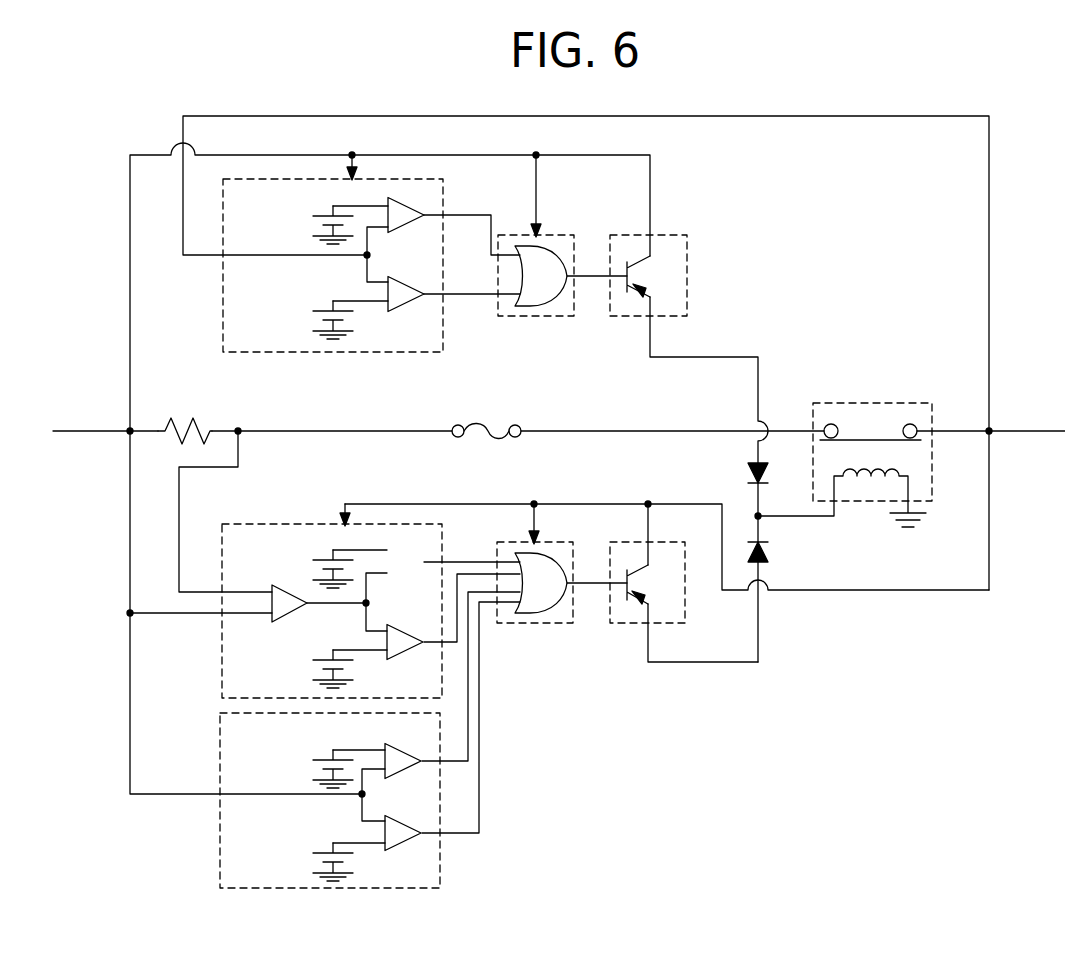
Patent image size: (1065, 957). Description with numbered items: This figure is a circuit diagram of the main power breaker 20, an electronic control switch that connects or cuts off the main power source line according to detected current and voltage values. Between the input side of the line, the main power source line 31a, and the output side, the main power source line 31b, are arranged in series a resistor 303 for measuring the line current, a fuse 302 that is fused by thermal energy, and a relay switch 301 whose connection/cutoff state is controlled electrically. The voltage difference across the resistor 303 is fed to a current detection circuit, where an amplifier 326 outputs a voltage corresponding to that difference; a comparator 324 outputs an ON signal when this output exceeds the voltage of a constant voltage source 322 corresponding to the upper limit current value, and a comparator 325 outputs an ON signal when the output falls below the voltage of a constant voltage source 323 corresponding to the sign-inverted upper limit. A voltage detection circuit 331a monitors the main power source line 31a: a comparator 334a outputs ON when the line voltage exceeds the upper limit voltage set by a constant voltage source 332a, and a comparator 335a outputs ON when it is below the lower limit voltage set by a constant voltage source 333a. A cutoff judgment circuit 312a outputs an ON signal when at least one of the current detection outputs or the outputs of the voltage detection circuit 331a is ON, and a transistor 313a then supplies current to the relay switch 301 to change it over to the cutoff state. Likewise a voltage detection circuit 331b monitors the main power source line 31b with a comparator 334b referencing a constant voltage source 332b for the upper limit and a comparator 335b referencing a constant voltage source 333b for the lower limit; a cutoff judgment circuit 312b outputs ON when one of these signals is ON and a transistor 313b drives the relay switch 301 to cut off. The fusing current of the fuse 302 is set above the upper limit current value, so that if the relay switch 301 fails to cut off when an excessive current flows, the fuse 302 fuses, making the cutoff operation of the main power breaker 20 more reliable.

The main power breaker 20 is at (910, 741).
The main power source line 31a is at (88, 431).
The main power source line 31b is at (1050, 431).
The relay switch 301 is at (917, 403).
The fuse 302 is at (490, 428).
The resistor 303 is at (205, 428).
The cutoff judgment circuit 312a is at (520, 623).
The cutoff judgment circuit 312b is at (562, 235).
The transistor 313a is at (617, 623).
The transistor 313b is at (672, 235).
The constant voltage source 322 is at (320, 560).
The constant voltage source 323 is at (320, 655).
The comparator 324 is at (222, 660).
The comparator 325 is at (418, 648).
The amplifier 326 is at (298, 608).
The voltage detection circuit 331a is at (220, 843).
The voltage detection circuit 331b is at (223, 283).
The constant voltage source 332a is at (320, 759).
The constant voltage source 332b is at (320, 216).
The constant voltage source 333a is at (320, 850).
The constant voltage source 333b is at (320, 311).
The comparator 334a is at (385, 748).
The comparator 334b is at (415, 207).
The comparator 335a is at (410, 843).
The comparator 335b is at (428, 304).